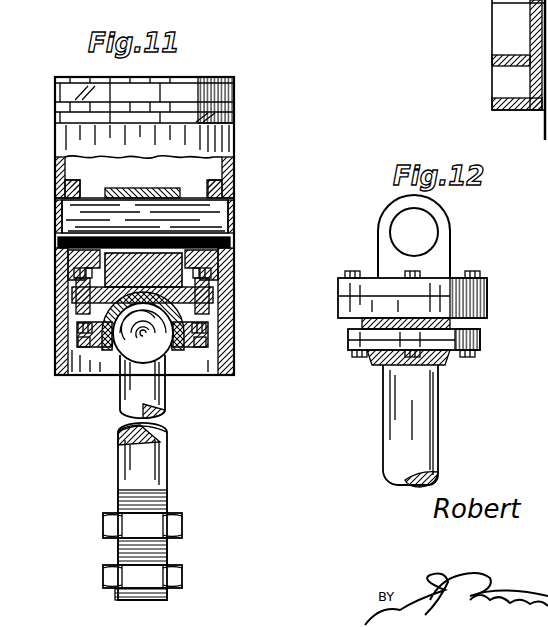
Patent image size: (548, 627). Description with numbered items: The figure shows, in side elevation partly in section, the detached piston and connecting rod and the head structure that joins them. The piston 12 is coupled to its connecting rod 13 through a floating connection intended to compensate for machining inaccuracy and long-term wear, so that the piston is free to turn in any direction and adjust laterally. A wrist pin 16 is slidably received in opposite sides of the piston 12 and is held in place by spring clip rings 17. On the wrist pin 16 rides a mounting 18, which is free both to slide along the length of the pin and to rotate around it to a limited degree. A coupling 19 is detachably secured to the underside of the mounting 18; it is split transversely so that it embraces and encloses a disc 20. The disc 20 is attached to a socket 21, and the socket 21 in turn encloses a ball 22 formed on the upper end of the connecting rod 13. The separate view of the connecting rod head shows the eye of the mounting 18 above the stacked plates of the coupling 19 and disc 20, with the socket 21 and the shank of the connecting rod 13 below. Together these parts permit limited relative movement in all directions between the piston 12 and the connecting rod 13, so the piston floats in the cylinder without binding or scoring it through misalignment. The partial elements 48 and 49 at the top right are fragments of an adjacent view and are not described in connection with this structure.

In FIG. 11, the piston 12 is at (236, 149).
In FIG. 11, the connecting rod 13 is at (167, 452).
In FIG. 12, the connecting rod 13 is at (438, 412).
In FIG. 11, the wrist pin 16 is at (222, 212).
In FIG. 11, the spring clip rings 17 is at (58, 244).
In FIG. 11, the mounting 18 is at (173, 196).
In FIG. 12, the mounting 18 is at (447, 235).
In FIG. 11, the coupling 19 is at (80, 330).
In FIG. 12, the coupling 19 is at (345, 310).
In FIG. 11, the disc 20 is at (75, 297).
In FIG. 11, the socket 21 is at (172, 358).
In FIG. 12, the socket 21 is at (447, 357).
In FIG. 11, the ball 22 is at (132, 362).
In FIG. 12, the wall section 48 is at (490, 34).
In FIG. 12, the bottom section 49 is at (492, 104).